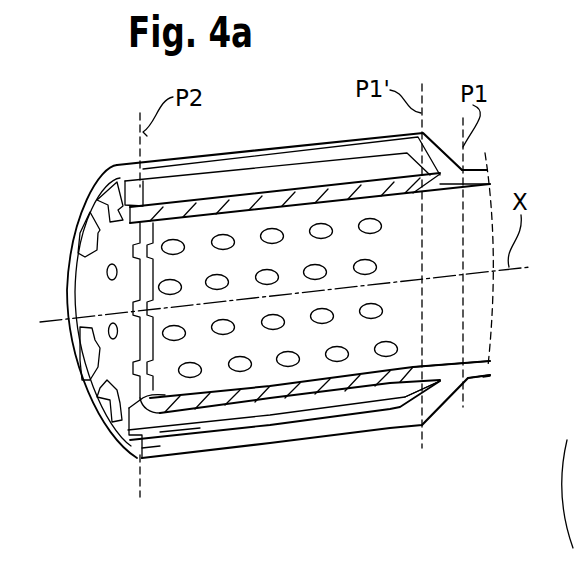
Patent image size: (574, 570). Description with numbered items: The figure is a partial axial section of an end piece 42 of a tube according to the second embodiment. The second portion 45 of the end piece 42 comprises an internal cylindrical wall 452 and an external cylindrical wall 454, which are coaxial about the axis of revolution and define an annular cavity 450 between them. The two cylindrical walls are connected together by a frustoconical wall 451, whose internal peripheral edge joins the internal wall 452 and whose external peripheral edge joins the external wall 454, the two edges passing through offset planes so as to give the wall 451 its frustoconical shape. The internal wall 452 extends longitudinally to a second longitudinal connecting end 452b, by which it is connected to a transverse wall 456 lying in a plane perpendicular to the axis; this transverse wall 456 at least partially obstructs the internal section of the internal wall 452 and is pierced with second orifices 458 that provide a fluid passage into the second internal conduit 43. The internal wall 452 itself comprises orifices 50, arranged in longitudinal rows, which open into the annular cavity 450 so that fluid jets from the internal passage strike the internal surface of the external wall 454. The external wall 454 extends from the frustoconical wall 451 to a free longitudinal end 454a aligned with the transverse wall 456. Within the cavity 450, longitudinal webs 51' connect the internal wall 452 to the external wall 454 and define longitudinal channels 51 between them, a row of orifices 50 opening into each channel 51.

The end piece 42 is at (252, 121).
The second internal conduit 43 is at (477, 306).
The second portion 45 is at (483, 377).
The orifices 50 is at (192, 371).
The longitudinal channels 51 is at (66, 374).
The longitudinal webs 51' is at (58, 222).
The annular cavity 450 is at (187, 418).
The frustoconical wall 451 is at (437, 398).
The internal cylindrical wall 452 is at (367, 388).
The second longitudinal connecting end 452b is at (134, 416).
The external cylindrical wall 454 is at (297, 433).
The free longitudinal end 454a is at (167, 452).
The transverse wall 456 is at (110, 188).
The second orifices 458 is at (104, 275).